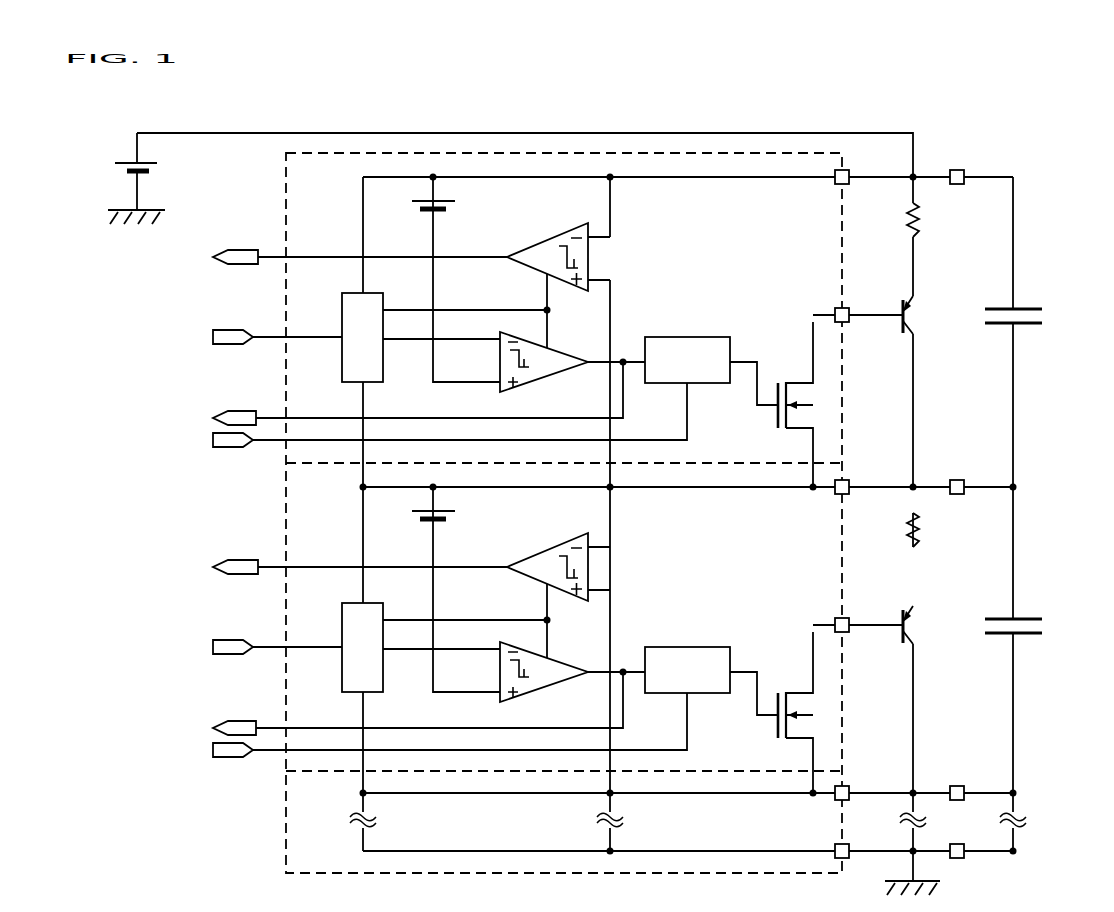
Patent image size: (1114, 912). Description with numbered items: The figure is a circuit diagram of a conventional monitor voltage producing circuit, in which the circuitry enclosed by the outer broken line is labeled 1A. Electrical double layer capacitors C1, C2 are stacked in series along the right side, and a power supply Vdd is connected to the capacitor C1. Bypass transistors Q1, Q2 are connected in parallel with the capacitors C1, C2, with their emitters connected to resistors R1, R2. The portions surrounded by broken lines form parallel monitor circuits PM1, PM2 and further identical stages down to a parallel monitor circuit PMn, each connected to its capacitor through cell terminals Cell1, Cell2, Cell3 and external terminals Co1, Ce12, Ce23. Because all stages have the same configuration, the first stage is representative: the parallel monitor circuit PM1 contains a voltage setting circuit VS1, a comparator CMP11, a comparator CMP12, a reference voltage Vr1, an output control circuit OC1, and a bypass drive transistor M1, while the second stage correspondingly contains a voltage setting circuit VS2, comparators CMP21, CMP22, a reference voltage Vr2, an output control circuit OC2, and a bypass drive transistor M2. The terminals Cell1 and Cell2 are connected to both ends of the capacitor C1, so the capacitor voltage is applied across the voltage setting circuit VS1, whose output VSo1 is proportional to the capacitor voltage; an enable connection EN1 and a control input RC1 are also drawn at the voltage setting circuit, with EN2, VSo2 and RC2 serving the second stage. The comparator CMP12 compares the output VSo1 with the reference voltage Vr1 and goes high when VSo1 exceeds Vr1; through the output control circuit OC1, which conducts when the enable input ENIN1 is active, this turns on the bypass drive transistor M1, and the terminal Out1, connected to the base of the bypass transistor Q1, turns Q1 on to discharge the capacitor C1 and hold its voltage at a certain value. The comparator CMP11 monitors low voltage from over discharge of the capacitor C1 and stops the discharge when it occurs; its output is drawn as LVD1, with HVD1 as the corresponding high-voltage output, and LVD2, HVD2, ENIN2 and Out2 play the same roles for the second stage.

The power supply Vdd is at (132, 178).
The battery monitoring device 1A is at (287, 170).
The parallel monitor circuit PM1 is at (564, 337).
The parallel monitor circuit PM2 is at (564, 646).
The parallel monitor circuit PMn is at (730, 837).
The reference voltage Vr1 is at (450, 279).
The reference voltage source Vr2 is at (450, 589).
The comparator CMP11 is at (557, 233).
The comparator CMP12 is at (540, 384).
The comparator CMP21 is at (557, 543).
The comparator CMP22 is at (540, 694).
The voltage setting circuit VS1 is at (341, 322).
The voltage selector VS2 is at (341, 632).
The enable signal EN1 is at (467, 311).
The enable signal EN2 is at (467, 621).
The output of the voltage setting circuit VSo1 is at (441, 327).
The selector output voltage VSo2 is at (441, 637).
The output control circuit OC1 is at (685, 337).
The output control circuit OC2 is at (685, 647).
The bypass drive transistor M1 is at (771, 404).
The MOS transistor M2 is at (771, 712).
The terminal Out1 is at (858, 310).
The output terminal Out2 is at (858, 620).
The terminal Cell1 is at (861, 169).
The terminal Cell2 is at (861, 479).
The cell terminal Cell3 is at (861, 785).
The external terminal Co1 is at (971, 172).
The external terminal Ce12 is at (973, 481).
The external terminal Ce23 is at (973, 784).
The resistor R1 is at (902, 220).
The resistor R2 is at (902, 530).
The bypass transistor Q1 is at (901, 306).
The bypass transistor Q2 is at (901, 616).
The electrical double layer capacitor C1 is at (1028, 318).
The electrical double layer capacitor C2 is at (1028, 628).
The low voltage detection output LVD1 is at (338, 256).
The low voltage detection output LVD2 is at (338, 566).
The control input RC1 is at (257, 337).
The control input RC2 is at (257, 647).
The high voltage detection output HVD1 is at (395, 394).
The high voltage detection output HVD2 is at (395, 704).
The element ENIN1 is at (426, 415).
The enable input ENIN2 is at (426, 725).